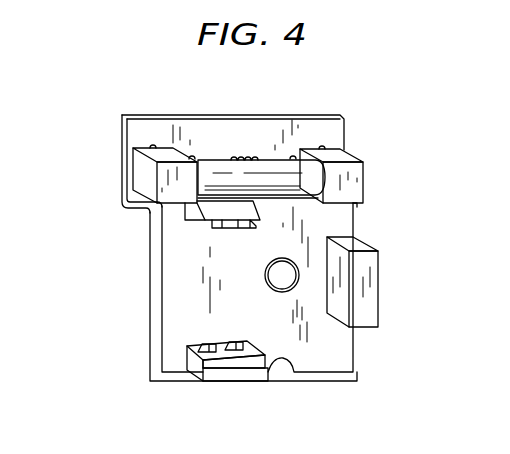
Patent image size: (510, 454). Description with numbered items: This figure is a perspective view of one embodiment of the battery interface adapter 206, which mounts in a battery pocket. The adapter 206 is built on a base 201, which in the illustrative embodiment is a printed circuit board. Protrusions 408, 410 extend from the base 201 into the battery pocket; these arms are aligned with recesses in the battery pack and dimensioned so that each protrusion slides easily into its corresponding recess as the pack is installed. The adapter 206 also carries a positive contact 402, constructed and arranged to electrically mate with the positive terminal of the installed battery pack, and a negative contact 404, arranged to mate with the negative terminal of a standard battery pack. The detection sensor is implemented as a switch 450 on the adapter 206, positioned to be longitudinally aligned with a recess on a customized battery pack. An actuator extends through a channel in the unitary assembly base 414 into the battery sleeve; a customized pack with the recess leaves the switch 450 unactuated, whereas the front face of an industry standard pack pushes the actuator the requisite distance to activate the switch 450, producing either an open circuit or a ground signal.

The base 201 is at (215, 130).
The battery interface adapter 206 is at (426, 117).
The positive contact 402 is at (225, 228).
The negative contact 404 is at (238, 350).
The protrusion 408 is at (195, 364).
The protrusion 410 is at (196, 220).
The unitary assembly base 414 is at (346, 220).
The switch 450 is at (286, 281).